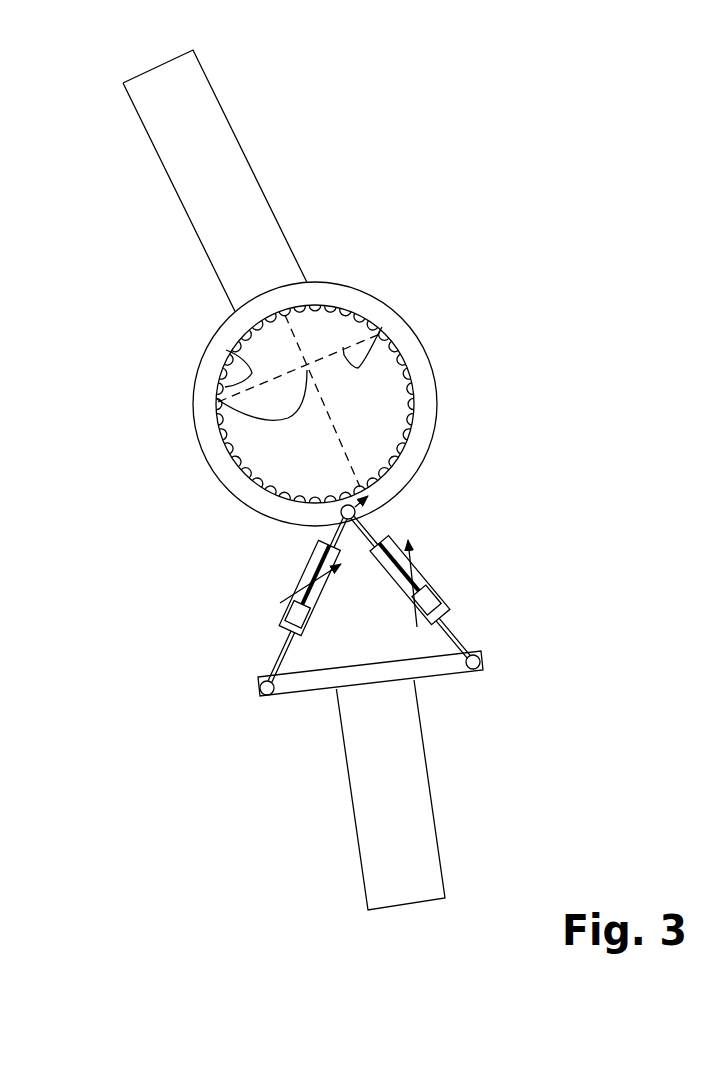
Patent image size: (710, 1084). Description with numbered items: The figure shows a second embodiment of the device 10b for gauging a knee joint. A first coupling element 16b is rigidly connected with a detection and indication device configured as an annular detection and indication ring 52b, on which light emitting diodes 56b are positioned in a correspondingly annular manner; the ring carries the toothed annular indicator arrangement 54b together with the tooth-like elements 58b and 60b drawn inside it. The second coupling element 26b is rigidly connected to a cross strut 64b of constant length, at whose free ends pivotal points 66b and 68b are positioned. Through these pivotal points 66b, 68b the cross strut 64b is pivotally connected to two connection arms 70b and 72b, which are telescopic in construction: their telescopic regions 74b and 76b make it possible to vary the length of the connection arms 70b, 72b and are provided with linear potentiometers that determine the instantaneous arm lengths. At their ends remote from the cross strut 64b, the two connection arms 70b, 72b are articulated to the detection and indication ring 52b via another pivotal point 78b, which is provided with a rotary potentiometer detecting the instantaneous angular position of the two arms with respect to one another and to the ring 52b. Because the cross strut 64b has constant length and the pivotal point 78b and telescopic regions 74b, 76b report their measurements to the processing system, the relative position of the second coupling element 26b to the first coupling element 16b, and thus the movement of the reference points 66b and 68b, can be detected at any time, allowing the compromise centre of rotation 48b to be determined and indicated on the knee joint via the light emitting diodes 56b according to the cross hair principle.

The tensioning device 10b is at (552, 270).
The first coupling element 16b is at (197, 116).
The second coupling element 26b is at (401, 843).
The compromise centre of rotation 48b is at (217, 399).
The detection and indication ring 52b is at (428, 377).
The ratchet teeth 54b is at (242, 485).
The light emitting diodes 56b is at (232, 352).
The pawl axis 58b is at (293, 330).
The second locking tooth 60b is at (382, 327).
The cross strut 64b is at (378, 677).
The pivotal point 66b is at (260, 691).
The pivotal point 68b is at (480, 665).
The connection arm 70b is at (266, 652).
The connection arm 72b is at (465, 625).
The telescopic region 74b is at (292, 586).
The telescopic region 76b is at (425, 568).
The pivotal point 78b is at (356, 512).